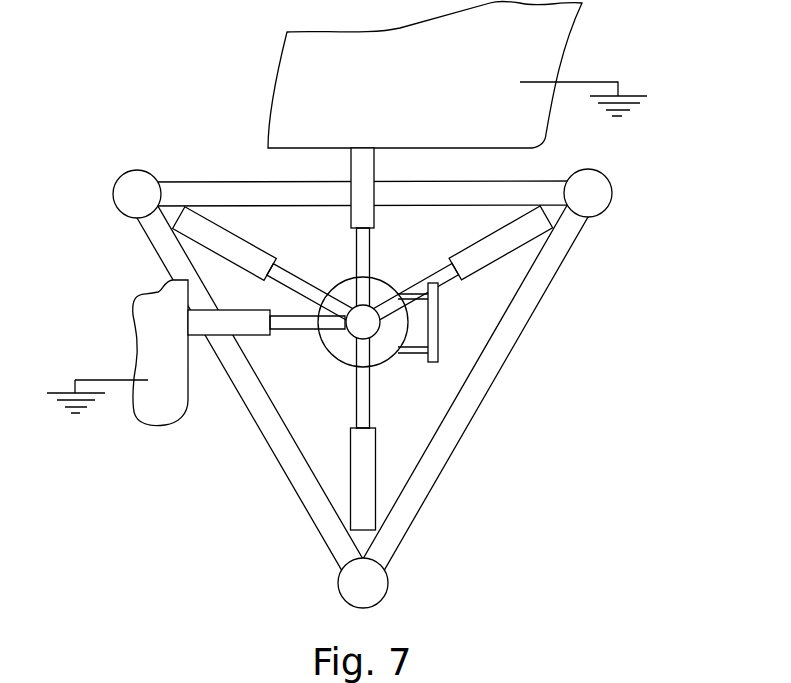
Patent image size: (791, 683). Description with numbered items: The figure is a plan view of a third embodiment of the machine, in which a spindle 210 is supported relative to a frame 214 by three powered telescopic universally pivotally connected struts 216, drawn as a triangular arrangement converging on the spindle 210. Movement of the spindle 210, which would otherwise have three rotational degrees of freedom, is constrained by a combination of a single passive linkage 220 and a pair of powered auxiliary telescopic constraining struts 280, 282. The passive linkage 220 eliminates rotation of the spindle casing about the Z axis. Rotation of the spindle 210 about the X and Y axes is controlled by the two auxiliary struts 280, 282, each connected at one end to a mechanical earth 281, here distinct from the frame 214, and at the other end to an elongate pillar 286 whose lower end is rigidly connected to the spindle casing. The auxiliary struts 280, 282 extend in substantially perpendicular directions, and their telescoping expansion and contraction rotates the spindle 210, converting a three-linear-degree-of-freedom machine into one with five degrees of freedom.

The spindle 210 is at (332, 340).
The frame 214 is at (488, 373).
The powered telescopic universally pivotally connected struts 216 is at (190, 233).
The passive linkage 220 is at (428, 361).
The auxiliary telescopic constraining strut 280 is at (363, 164).
The mechanical earth 281 is at (300, 85).
The auxiliary telescopic constraining strut 282 is at (210, 334).
The elongate pillar 286 is at (369, 316).